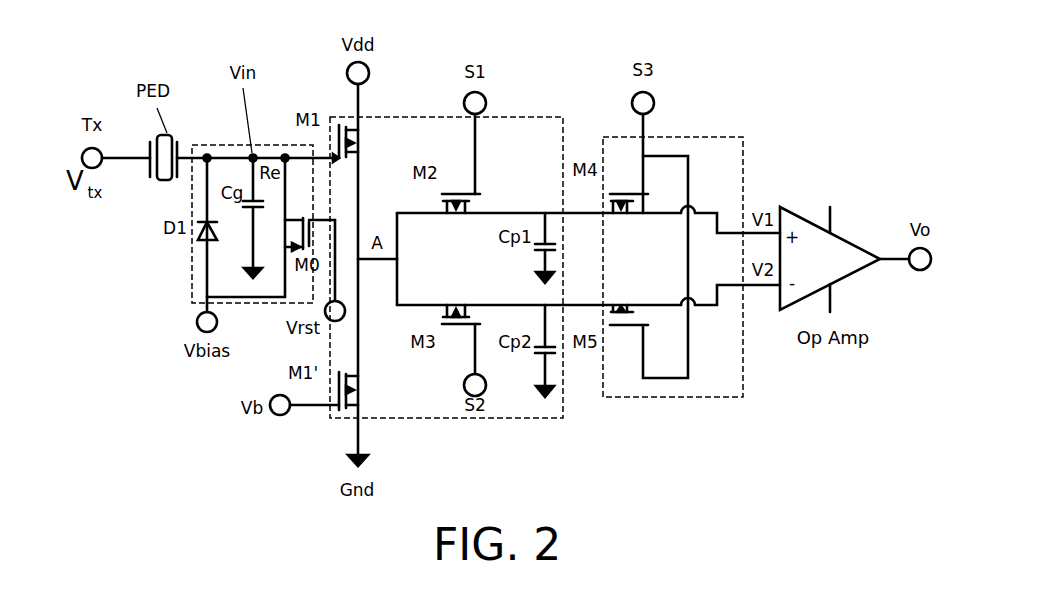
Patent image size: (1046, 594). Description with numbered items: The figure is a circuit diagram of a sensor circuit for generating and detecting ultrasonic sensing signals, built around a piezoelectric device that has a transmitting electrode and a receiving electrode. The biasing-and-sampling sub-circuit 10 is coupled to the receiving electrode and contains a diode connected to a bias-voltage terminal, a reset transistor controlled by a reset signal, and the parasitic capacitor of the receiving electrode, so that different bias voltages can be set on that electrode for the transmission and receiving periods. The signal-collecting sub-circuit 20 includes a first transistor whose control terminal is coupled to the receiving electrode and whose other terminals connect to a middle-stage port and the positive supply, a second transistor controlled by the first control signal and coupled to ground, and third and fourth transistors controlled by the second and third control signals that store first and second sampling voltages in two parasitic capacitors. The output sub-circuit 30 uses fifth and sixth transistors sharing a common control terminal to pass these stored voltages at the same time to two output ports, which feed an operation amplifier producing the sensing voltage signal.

The biasing-and-sampling sub-circuit 10 is at (240, 305).
The signal-collecting sub-circuit 20 is at (527, 420).
The output sub-circuit 30 is at (705, 397).